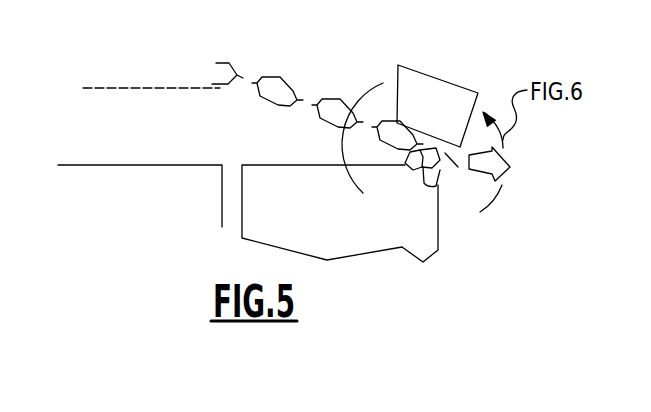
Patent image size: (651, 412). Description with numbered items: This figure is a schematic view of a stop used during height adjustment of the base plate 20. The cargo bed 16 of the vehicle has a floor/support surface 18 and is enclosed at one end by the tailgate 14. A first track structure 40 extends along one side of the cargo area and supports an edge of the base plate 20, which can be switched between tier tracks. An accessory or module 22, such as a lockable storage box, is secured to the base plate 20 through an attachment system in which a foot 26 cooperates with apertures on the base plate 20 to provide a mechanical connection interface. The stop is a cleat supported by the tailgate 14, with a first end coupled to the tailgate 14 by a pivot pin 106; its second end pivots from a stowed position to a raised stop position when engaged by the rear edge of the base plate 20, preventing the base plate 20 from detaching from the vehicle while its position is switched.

The first track structure 40 is at (131, 72).
The base plate 20 is at (265, 62).
The accessory/module 22 is at (412, 95).
The foot 26 is at (421, 168).
The pivot pin 106 is at (451, 188).
The tailgate 14 is at (343, 238).
The floor/support surface 18 is at (143, 165).
The cargo bed 16 is at (82, 148).